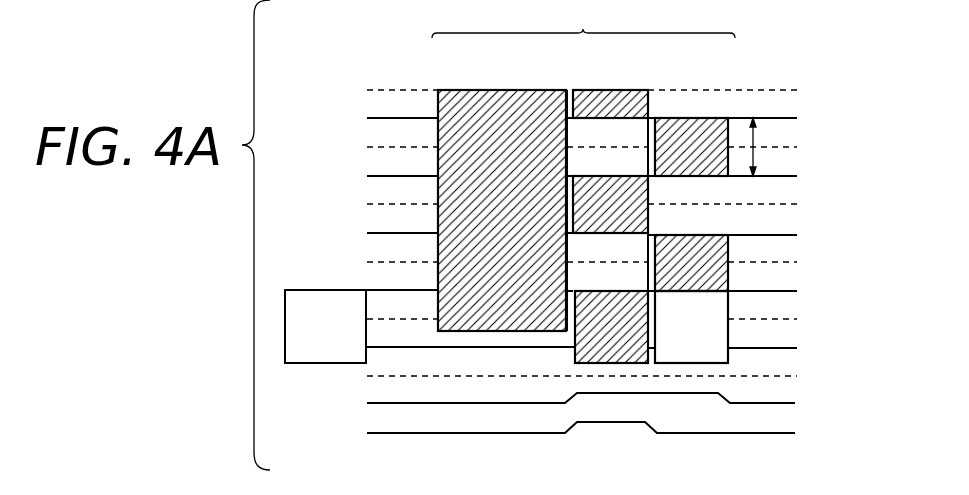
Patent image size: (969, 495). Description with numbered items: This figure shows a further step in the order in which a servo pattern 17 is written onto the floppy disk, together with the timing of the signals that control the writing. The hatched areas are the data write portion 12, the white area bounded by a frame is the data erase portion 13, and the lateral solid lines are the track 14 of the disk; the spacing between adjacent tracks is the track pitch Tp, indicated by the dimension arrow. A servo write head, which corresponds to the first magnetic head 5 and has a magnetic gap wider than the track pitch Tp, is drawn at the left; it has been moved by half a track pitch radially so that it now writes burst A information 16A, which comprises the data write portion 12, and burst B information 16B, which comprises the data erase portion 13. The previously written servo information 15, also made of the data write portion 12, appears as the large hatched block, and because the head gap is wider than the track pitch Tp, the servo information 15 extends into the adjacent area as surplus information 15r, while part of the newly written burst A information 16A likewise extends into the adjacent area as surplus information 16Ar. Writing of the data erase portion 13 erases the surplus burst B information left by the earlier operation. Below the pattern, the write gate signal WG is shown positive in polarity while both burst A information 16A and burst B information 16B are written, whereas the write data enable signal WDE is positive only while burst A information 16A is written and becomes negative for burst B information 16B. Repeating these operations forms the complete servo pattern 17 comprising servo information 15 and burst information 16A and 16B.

The servo pattern 17 is at (583, 19).
The servo information 15 is at (480, 93).
The data write portion 12 is at (568, 89).
The burst A information 16A is at (571, 213).
The surplus information 16Ar is at (575, 358).
The burst B information 16B is at (705, 118).
The data erase portion 13 is at (728, 358).
The track 14 is at (797, 118).
The track pitch Tp is at (753, 147).
The first magnetic head 5 is at (346, 289).
The surplus information 15r is at (438, 328).
The write gate signal WG is at (543, 418).
The write data enable signal WDE is at (543, 448).